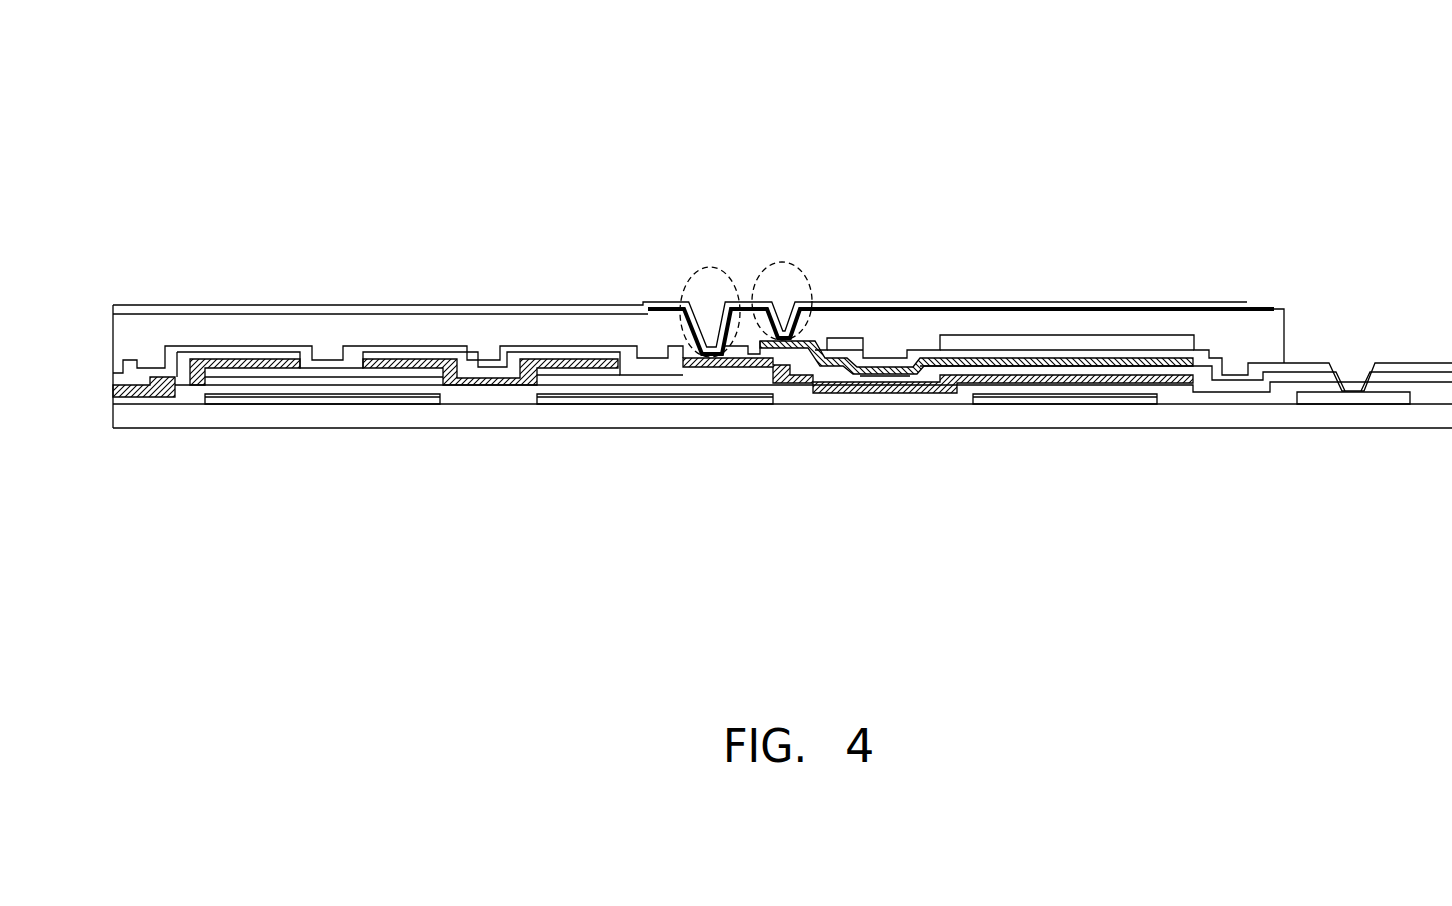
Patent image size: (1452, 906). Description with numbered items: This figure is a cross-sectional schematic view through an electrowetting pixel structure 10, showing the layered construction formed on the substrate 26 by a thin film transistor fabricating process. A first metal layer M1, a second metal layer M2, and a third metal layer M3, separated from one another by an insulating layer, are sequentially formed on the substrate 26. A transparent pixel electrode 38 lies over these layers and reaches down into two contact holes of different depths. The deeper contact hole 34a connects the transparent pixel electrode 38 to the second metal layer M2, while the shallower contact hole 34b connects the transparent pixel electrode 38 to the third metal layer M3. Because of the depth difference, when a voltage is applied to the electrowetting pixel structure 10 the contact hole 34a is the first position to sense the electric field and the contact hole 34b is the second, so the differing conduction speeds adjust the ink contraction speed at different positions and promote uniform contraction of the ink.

The electrowetting pixel structure 10 is at (332, 68).
The substrate 26 is at (635, 413).
The first metal layer M1 is at (1047, 398).
The second metal layer M2 is at (735, 365).
The third metal layer M3 is at (827, 340).
The transparent pixel electrode 38 is at (664, 308).
The contact hole 34a is at (693, 277).
The contact hole 34b is at (807, 278).